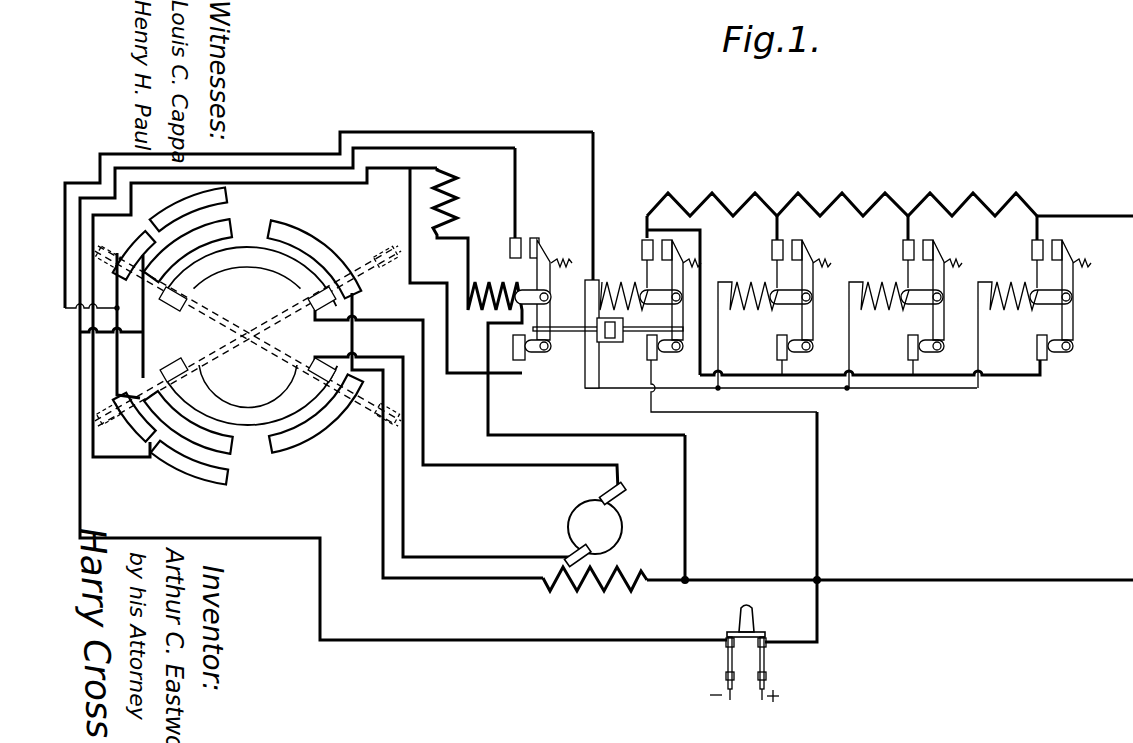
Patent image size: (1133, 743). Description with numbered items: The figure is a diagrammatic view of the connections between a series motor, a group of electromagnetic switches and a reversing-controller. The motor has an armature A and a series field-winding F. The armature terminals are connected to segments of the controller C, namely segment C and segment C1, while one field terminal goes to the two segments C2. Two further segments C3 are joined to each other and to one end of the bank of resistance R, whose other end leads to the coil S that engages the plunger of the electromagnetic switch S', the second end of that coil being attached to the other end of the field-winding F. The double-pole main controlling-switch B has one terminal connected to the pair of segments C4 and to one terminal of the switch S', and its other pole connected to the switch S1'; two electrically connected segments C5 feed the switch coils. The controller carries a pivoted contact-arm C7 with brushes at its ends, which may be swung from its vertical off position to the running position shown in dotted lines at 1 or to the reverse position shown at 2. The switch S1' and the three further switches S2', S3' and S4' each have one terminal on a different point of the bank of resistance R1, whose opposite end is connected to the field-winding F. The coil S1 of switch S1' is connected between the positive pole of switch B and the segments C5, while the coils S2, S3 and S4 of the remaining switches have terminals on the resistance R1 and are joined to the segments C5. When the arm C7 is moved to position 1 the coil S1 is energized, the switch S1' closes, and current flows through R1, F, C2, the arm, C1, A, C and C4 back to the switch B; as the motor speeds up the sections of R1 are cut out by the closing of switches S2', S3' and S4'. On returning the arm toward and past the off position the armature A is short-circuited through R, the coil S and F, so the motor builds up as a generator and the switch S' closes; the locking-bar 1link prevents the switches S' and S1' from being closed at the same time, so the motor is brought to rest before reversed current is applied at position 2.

The controller C is at (265, 268).
The segment c' C1 is at (253, 395).
The segments c2 C2 is at (326, 256).
The segments c3 C3 is at (175, 212).
The segments c4 C4 is at (157, 378).
The segments c5 C5 is at (140, 236).
The contact-arm C7 is at (230, 328).
The arm position 1 1 is at (140, 273).
The arm position 2 2 is at (247, 334).
The locking-bar 1link is at (636, 327).
The bank of resistance R is at (455, 226).
The bank of resistance R' R1 is at (842, 193).
The coil s S is at (520, 305).
The electromagnetic switch S S' is at (532, 355).
The coil s' S1 is at (643, 314).
The electromagnetic switch S' S1' is at (666, 355).
The coil s2 S2 is at (774, 314).
The electromagnetic switch S2 S2' is at (796, 356).
The coil s3 S3 is at (905, 314).
The electromagnetic switch S3 S3' is at (927, 356).
The coil s4 S4 is at (1034, 314).
The electromagnetic switch S4 S4' is at (1057, 356).
The armature A is at (594, 524).
The series field-winding F is at (598, 573).
The double-pole main controlling-switch B is at (744, 653).